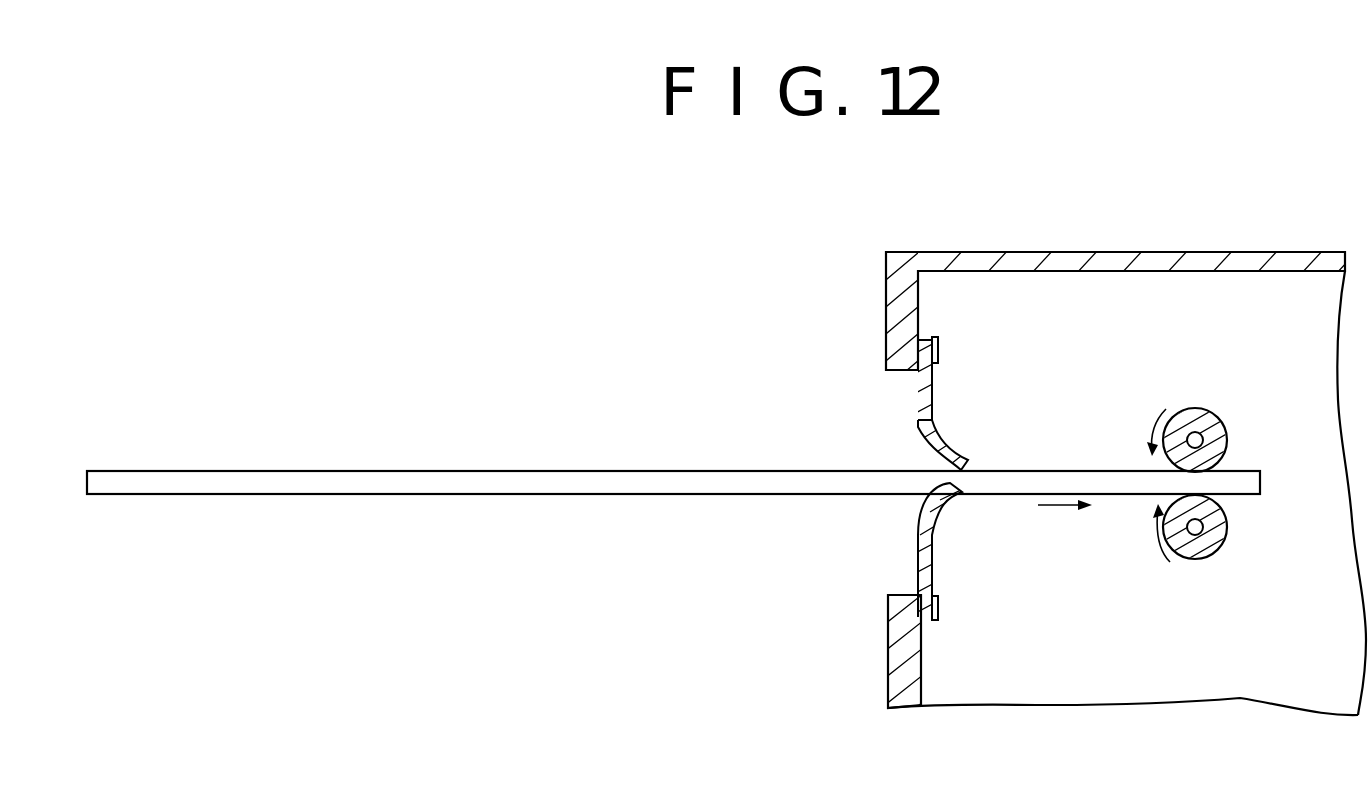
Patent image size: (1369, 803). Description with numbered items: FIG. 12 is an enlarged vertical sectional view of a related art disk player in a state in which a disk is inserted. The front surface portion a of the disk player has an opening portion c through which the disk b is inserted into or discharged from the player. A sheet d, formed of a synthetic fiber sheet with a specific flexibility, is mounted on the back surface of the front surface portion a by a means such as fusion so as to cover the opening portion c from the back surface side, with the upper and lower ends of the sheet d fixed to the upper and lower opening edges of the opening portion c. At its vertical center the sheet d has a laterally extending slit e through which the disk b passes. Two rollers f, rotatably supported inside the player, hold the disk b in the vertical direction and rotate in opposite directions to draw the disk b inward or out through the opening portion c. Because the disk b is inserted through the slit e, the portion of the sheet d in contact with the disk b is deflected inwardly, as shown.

The front surface portion a is at (895, 334).
The disk b is at (700, 470).
The opening portion c is at (898, 378).
The sheet d is at (916, 428).
The slit e is at (937, 493).
The rollers f is at (1218, 415).